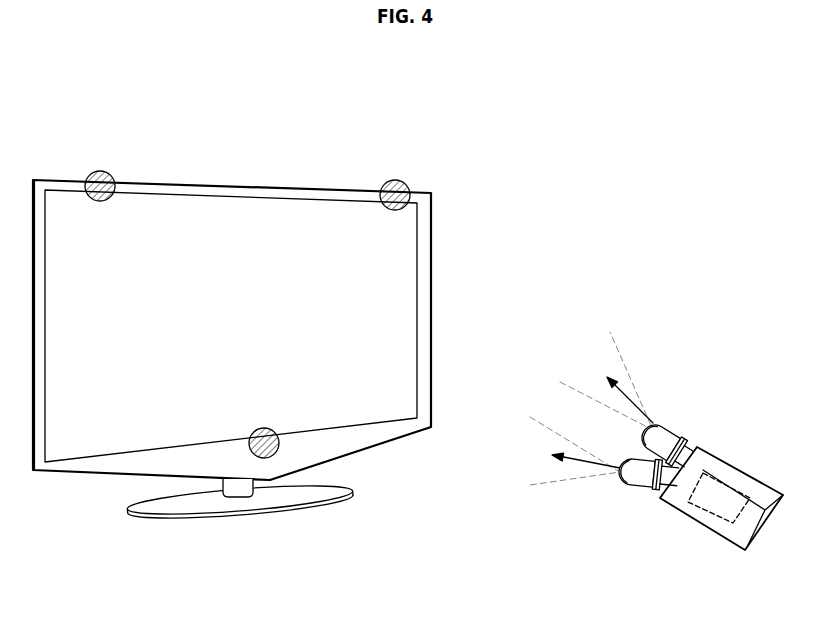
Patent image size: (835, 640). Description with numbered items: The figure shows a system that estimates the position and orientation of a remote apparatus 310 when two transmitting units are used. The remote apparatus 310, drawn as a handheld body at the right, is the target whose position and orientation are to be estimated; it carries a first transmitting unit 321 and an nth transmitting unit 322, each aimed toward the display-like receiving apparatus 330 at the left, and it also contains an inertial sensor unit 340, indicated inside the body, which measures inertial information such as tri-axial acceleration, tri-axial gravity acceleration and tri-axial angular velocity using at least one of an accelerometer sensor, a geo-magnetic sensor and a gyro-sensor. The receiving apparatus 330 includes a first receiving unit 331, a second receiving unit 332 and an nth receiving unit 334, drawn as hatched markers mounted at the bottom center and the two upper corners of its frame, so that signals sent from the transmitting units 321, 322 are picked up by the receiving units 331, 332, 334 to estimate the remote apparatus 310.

The remote apparatus 310 is at (734, 448).
The first transmitting unit 321 is at (658, 424).
The nth transmitting unit 322 is at (627, 484).
The receiving apparatus 330 is at (264, 160).
The first receiving unit 331 is at (267, 429).
The second receiving unit 332 is at (398, 180).
The nth receiving unit 334 is at (102, 170).
The inertial sensor unit 340 is at (708, 512).